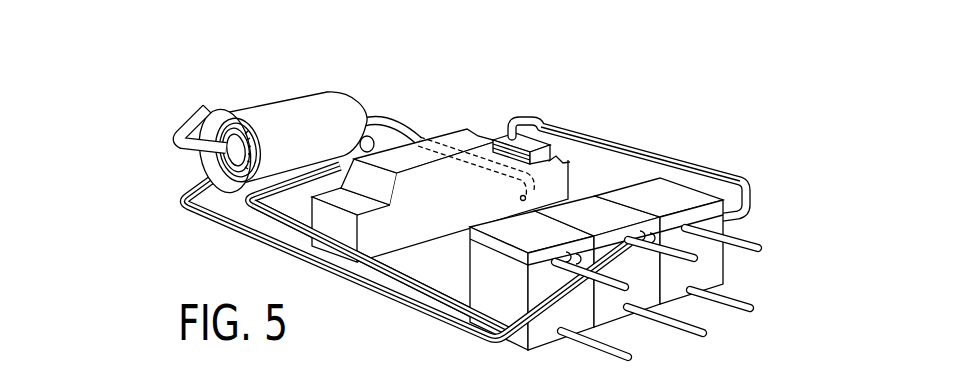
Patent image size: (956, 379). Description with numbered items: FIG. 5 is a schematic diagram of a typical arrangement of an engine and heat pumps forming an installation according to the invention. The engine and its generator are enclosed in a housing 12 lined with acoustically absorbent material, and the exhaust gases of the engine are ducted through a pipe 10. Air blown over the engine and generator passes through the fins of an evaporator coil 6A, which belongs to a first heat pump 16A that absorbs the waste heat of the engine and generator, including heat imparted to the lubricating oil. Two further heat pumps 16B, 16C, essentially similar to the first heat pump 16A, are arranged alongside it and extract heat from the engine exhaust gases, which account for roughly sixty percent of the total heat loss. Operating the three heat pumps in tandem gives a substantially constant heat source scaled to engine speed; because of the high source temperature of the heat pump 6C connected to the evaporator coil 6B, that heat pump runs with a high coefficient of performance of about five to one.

The pipe 10 is at (205, 108).
The evaporator coil 6A is at (523, 142).
The evaporator coil 6B is at (244, 120).
The heat pump 6C is at (234, 126).
The housing 12 is at (417, 146).
The first heat pump 16A is at (665, 188).
The heat pump 16B is at (585, 202).
The heat pump 16C is at (497, 223).